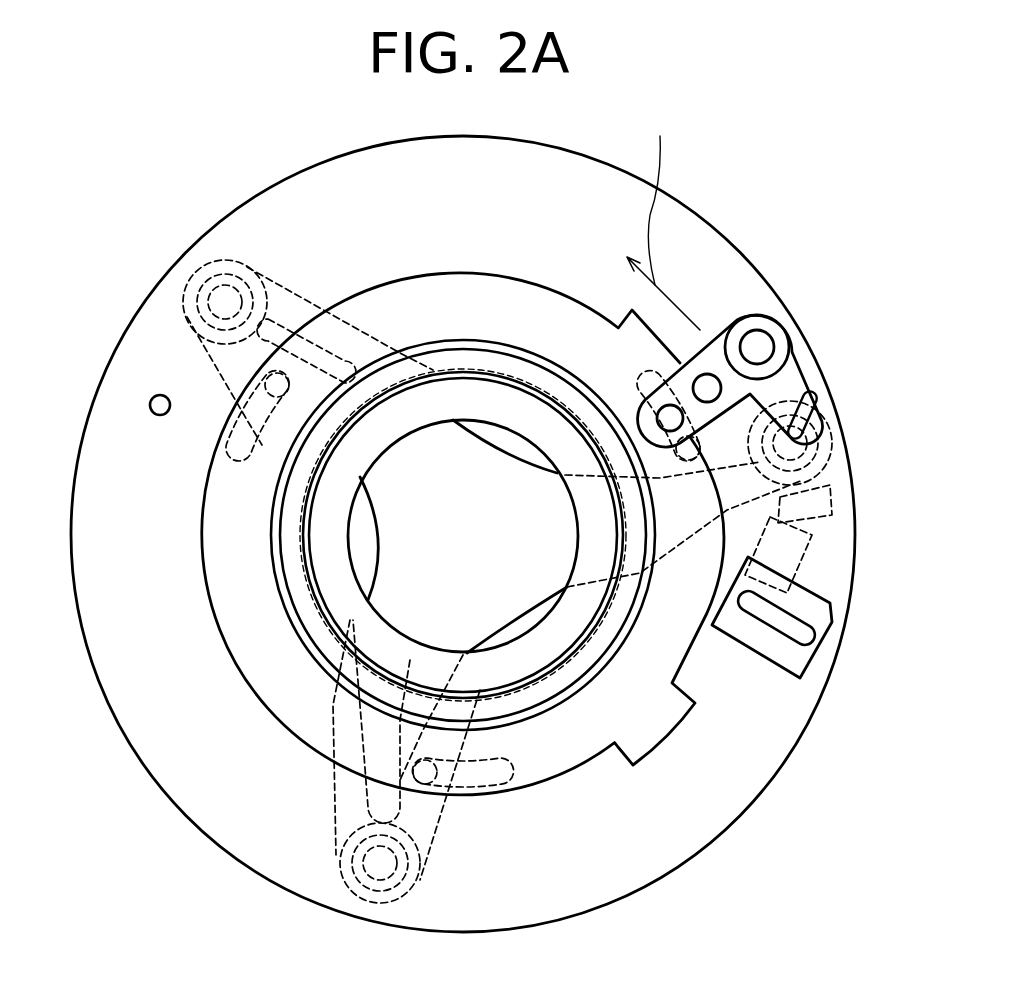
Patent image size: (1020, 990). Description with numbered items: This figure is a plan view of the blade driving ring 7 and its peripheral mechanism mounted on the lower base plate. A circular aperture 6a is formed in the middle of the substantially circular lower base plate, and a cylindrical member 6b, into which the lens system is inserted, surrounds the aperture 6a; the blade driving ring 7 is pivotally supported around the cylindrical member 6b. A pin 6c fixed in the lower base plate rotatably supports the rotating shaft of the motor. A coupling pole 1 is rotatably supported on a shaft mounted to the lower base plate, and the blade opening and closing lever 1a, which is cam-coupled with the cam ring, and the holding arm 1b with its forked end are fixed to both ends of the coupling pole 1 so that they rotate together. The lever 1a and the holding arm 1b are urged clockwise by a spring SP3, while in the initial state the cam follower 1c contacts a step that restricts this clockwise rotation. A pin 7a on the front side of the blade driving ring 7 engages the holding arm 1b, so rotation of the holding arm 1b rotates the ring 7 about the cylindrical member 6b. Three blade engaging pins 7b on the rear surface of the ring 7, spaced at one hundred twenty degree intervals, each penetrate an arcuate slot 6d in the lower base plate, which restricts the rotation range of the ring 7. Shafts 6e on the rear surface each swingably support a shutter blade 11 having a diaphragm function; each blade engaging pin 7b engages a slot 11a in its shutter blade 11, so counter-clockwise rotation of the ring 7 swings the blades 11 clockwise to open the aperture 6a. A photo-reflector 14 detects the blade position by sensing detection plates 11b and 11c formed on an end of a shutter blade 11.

The coupling pole 1 is at (754, 330).
The blade opening and closing lever 1a is at (812, 340).
The holding arm 1b is at (723, 320).
The cam follower 1c is at (822, 395).
The aperture 6a is at (576, 513).
The cylindrical member 6b is at (366, 452).
The pin 6c is at (156, 414).
The arcuate slot 6d is at (270, 442).
The shaft 6e is at (237, 292).
The blade driving ring 7 is at (548, 288).
The pin 7a is at (612, 436).
The blade engaging pin 7b is at (265, 387).
The shutter blade 11 is at (185, 312).
The slot 11a is at (250, 368).
The detection plate 11b is at (812, 568).
The detection plate 11c is at (828, 512).
The photo-reflector 14 is at (775, 678).
The spring SP3 is at (663, 219).